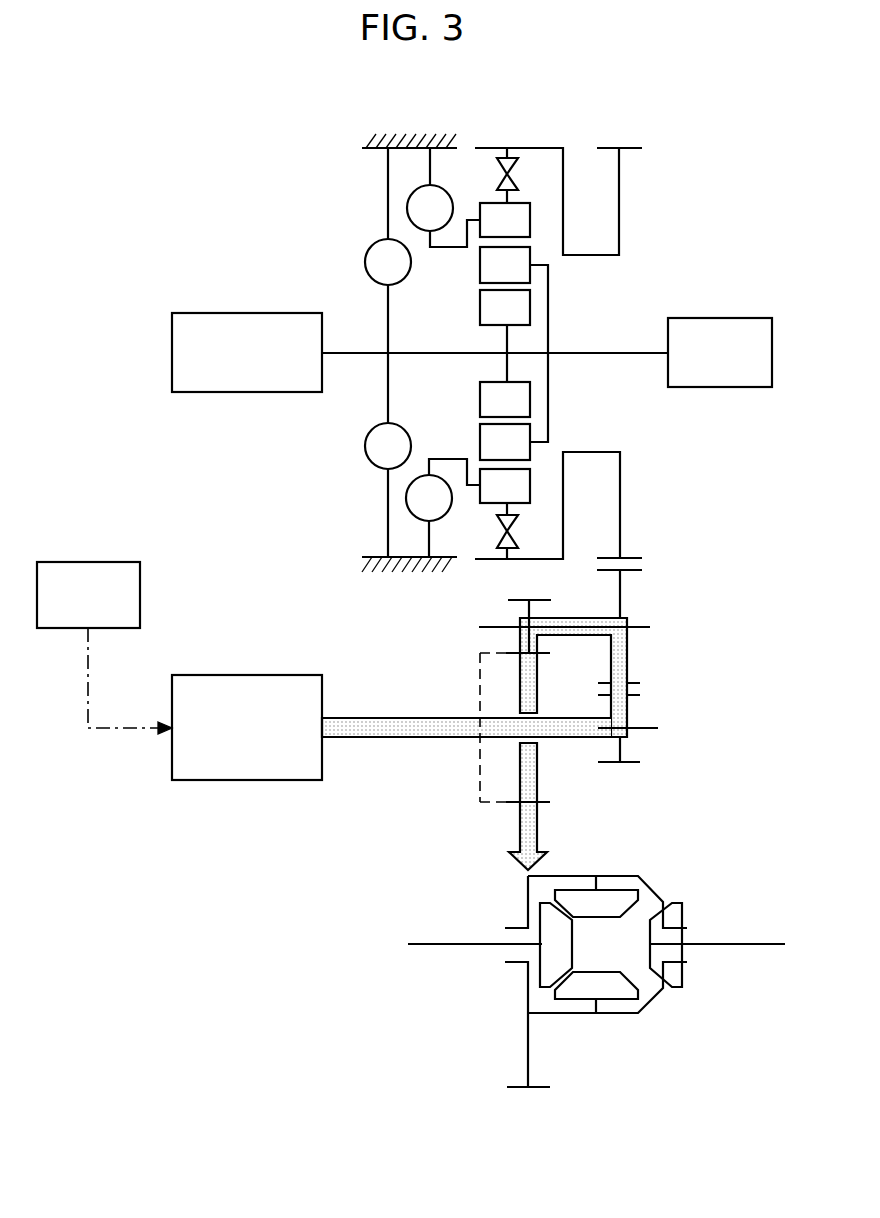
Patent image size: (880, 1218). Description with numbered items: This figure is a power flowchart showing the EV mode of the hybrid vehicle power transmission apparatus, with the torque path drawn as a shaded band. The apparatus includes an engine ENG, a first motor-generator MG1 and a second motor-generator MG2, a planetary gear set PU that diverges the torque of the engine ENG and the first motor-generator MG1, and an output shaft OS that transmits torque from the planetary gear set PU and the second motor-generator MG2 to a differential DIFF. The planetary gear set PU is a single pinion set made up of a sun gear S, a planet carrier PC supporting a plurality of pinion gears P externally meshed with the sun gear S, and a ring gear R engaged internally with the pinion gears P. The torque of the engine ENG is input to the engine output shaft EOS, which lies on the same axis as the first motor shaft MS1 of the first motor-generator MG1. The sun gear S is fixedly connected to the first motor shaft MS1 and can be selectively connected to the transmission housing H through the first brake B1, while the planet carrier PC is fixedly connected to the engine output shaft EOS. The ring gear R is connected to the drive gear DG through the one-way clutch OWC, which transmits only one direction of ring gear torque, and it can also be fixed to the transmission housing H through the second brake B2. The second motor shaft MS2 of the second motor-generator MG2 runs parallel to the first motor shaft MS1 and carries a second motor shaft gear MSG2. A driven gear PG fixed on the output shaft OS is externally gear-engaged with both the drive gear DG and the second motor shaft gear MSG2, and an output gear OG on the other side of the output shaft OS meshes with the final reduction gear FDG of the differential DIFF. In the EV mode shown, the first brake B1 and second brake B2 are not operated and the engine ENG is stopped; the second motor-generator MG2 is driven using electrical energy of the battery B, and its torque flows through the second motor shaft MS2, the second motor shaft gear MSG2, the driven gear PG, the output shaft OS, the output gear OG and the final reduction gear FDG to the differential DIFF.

The transmission housing H is at (410, 146).
The first brake B1 is at (388, 352).
The second brake B2 is at (443, 352).
The one-way clutch OWC is at (525, 175).
The planetary gear set PU is at (579, 264).
The ring gear R is at (505, 220).
The pinion gear P is at (505, 265).
The sun gear S is at (505, 307).
The planet carrier PC is at (548, 302).
The first motor-generator MG1 is at (247, 352).
The first motor shaft MS1 is at (355, 355).
The engine output shaft EOS is at (607, 355).
The engine ENG is at (720, 352).
The drive gear DG is at (620, 505).
The driven gear PG is at (620, 597).
The output shaft OS is at (630, 628).
The second motor shaft MS2 is at (355, 740).
The output gear OG is at (520, 606).
The second motor shaft gear MSG2 is at (628, 712).
The final reduction gear FDG is at (537, 822).
The differential DIFF is at (662, 878).
The battery B is at (88, 562).
The second motor-generator MG2 is at (247, 727).